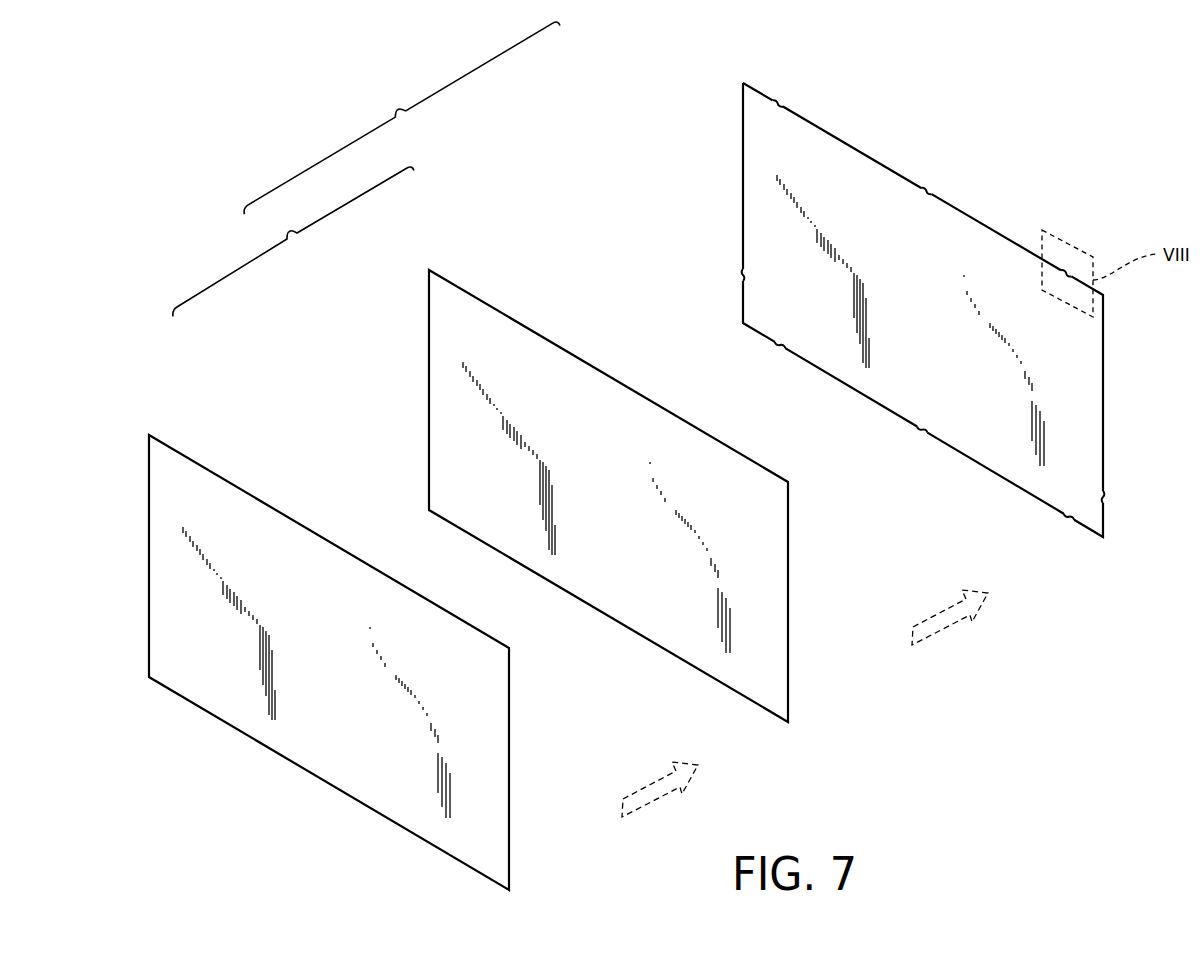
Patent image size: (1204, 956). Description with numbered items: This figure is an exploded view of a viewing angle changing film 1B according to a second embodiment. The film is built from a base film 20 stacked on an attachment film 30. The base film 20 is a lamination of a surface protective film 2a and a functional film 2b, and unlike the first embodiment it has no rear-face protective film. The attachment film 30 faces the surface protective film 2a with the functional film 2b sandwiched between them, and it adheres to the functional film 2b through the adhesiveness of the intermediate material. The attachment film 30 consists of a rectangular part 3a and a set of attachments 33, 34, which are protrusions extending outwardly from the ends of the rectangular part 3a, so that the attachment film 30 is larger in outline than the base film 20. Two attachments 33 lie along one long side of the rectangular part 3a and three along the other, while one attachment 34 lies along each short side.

The viewing angle changing film 1B is at (402, 118).
The base film 20 is at (293, 242).
The attachment film 30 is at (867, 308).
The surface protective film 2a is at (193, 460).
The functional film 2b is at (470, 292).
The rectangular part 3a is at (929, 206).
The attachment 33 is at (783, 97).
The attachment 34 is at (741, 272).